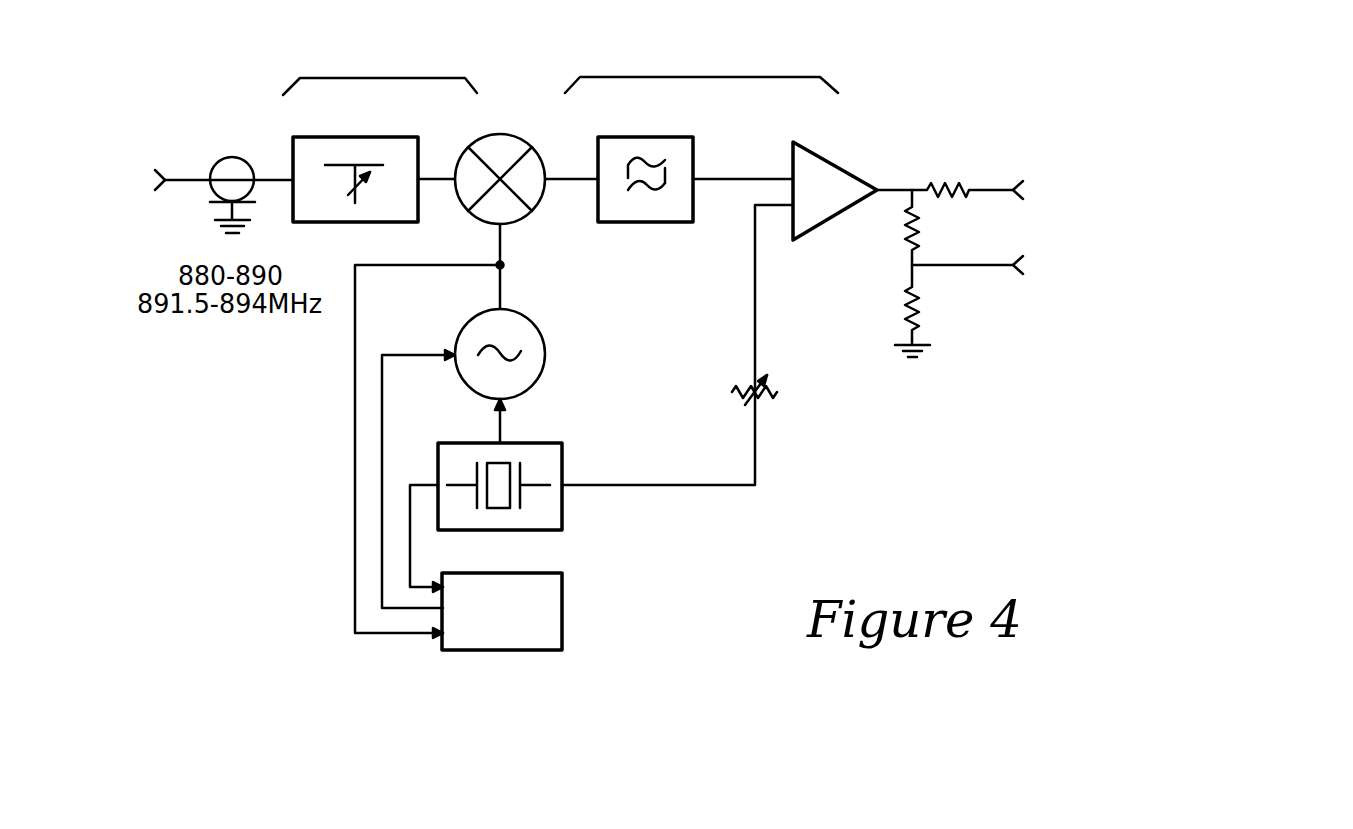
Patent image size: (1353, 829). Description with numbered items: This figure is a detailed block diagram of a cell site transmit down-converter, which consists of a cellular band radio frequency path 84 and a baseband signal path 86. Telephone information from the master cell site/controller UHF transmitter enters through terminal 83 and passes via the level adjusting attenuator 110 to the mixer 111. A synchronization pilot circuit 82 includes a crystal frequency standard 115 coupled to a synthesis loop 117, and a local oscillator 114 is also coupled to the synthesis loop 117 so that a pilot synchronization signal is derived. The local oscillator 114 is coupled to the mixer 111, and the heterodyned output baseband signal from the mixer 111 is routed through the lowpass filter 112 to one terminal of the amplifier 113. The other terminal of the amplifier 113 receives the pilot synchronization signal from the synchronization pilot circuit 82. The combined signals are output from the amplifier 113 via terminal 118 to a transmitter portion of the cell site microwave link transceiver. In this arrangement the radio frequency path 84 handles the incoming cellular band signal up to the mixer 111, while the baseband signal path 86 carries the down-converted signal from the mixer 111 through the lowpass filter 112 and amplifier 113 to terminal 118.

The synchronization pilot circuit 82 is at (594, 543).
The terminal 83 is at (148, 184).
The cellular band radio frequency path 84 is at (443, 77).
The baseband signal path 86 is at (758, 72).
The level adjusting attenuator 110 is at (333, 137).
The mixer 111 is at (482, 140).
The lowpass filter 112 is at (628, 137).
The amplifier 113 is at (812, 155).
The local oscillator 114 is at (521, 318).
The crystal frequency standard 115 is at (560, 465).
The synthesis loop 117 is at (477, 650).
The terminal 118 is at (1022, 185).